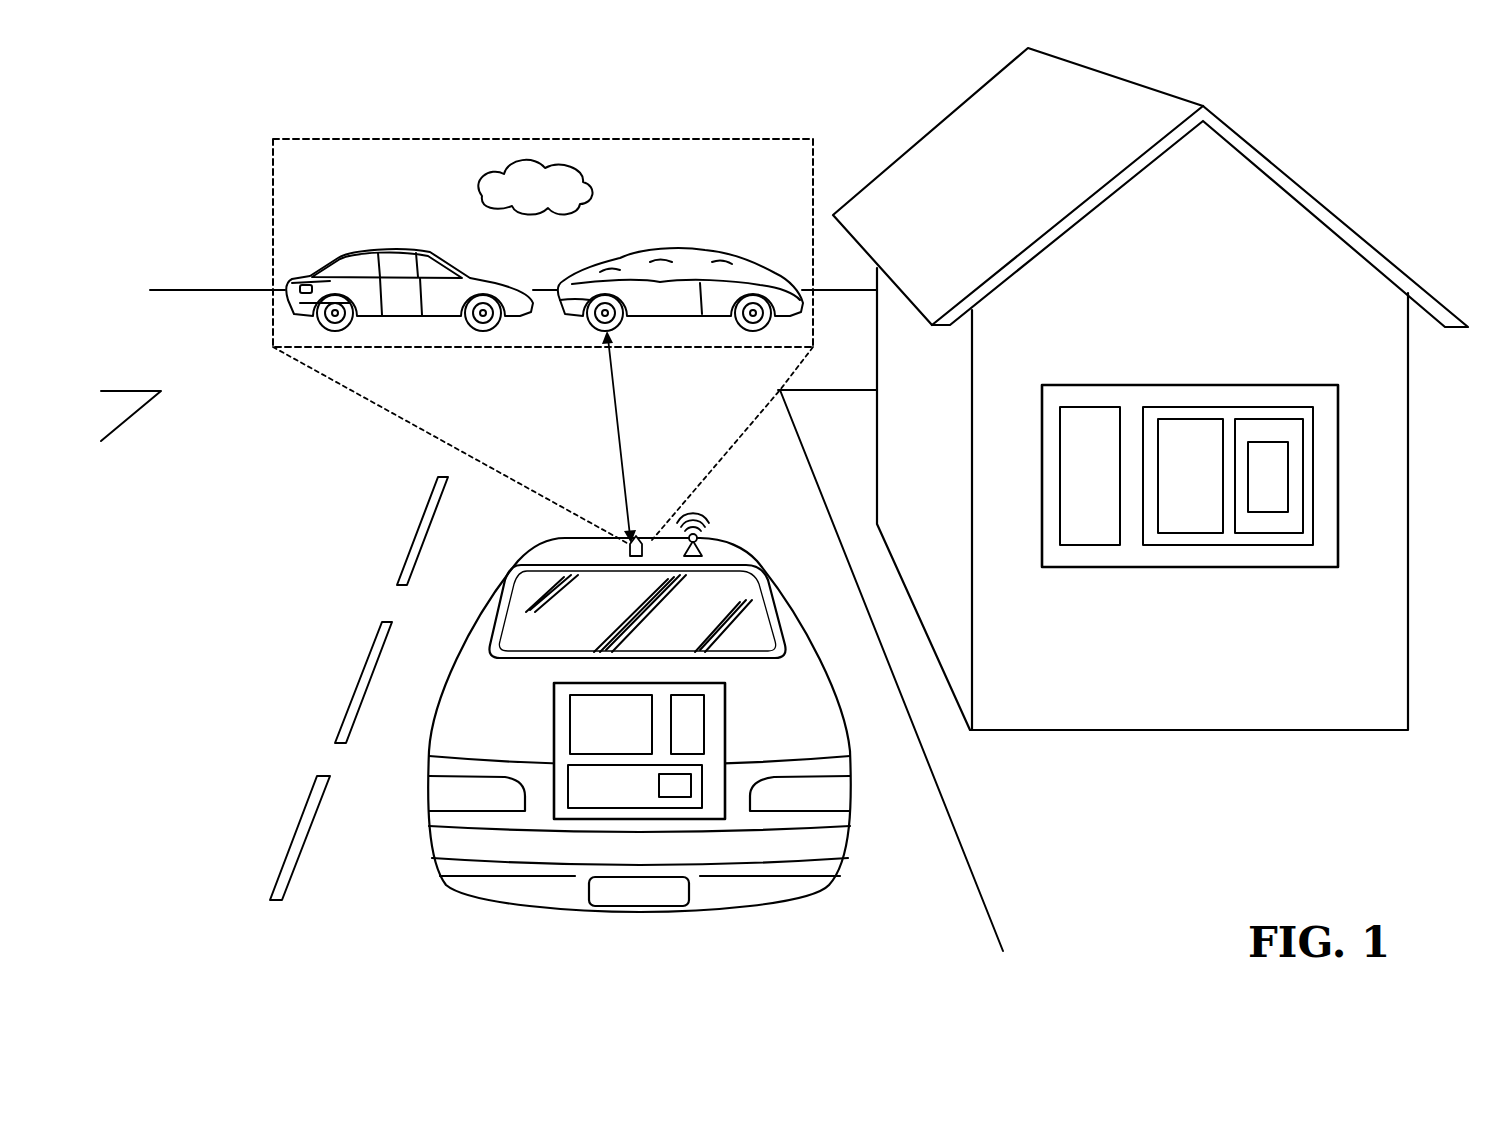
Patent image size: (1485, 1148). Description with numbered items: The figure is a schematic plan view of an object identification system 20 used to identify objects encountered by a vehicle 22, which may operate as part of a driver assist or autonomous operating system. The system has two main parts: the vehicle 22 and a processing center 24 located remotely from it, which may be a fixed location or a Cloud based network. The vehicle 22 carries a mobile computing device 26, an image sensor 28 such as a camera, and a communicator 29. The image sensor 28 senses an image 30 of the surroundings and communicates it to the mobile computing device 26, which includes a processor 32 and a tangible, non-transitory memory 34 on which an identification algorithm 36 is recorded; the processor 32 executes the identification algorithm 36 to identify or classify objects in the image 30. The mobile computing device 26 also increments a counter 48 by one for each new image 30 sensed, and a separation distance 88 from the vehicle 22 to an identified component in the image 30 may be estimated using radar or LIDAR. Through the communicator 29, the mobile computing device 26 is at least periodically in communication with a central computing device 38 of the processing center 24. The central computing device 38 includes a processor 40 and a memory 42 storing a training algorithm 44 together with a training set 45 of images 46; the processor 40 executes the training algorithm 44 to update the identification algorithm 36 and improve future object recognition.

The object identification system 20 is at (736, 771).
The vehicle 22 is at (466, 667).
The processing center 24 is at (1315, 186).
The mobile computing device 26 is at (729, 715).
The image sensor 28 is at (624, 551).
The communicator 29 is at (703, 546).
The image 30 is at (514, 138).
The processor 32 is at (595, 731).
The memory 34 is at (704, 800).
The identification algorithm 36 is at (679, 799).
The central computing device 38 is at (1082, 568).
The processor 40 is at (1074, 488).
The memory 42 is at (1188, 546).
The training algorithm 44 is at (1177, 488).
The training set 45 is at (1260, 534).
The images 46 is at (1256, 488).
The counter 48 is at (675, 731).
The separation distance 88 is at (620, 433).